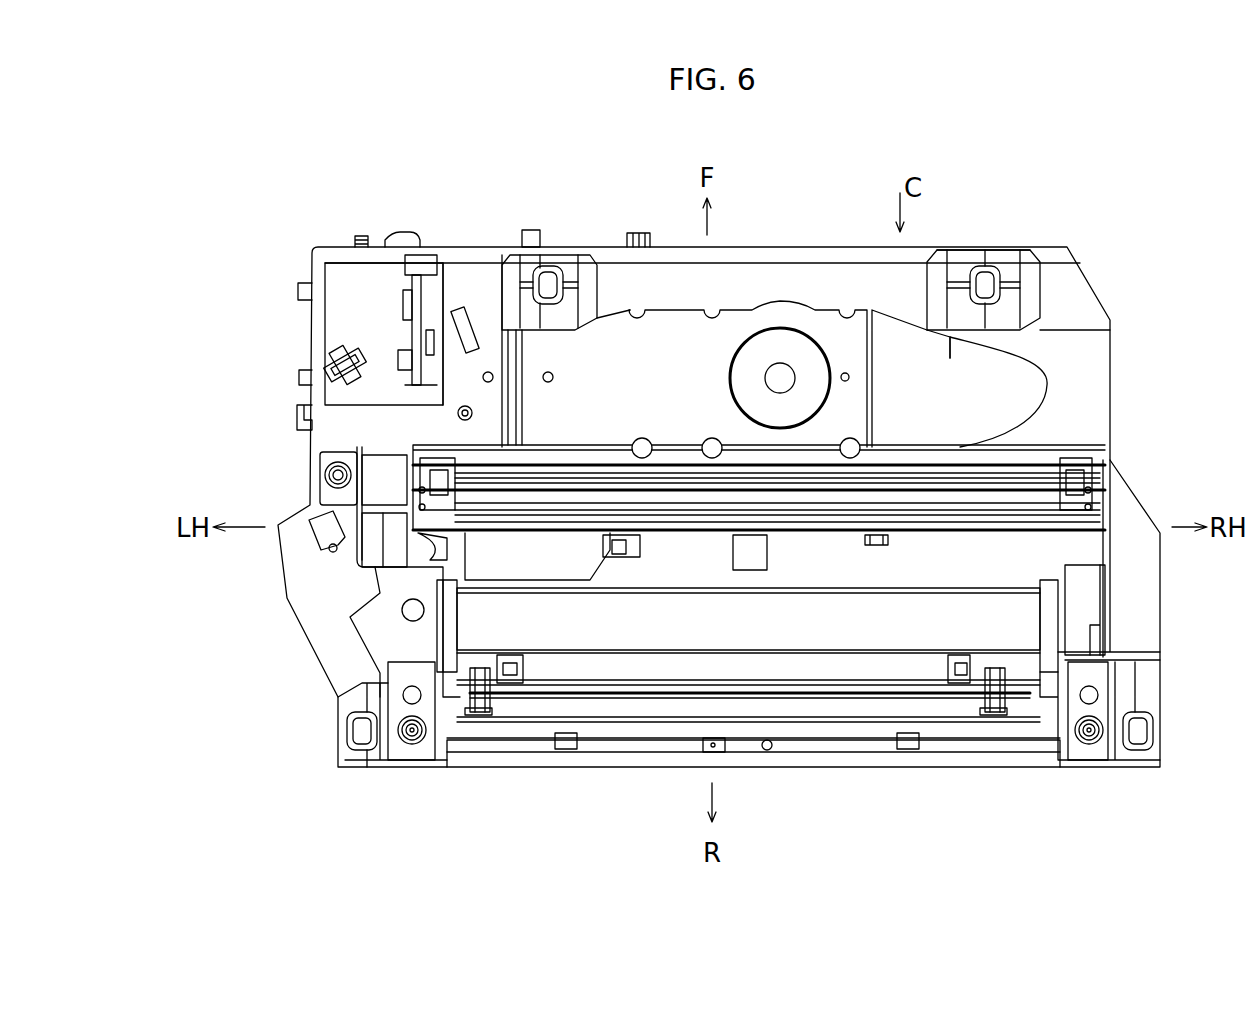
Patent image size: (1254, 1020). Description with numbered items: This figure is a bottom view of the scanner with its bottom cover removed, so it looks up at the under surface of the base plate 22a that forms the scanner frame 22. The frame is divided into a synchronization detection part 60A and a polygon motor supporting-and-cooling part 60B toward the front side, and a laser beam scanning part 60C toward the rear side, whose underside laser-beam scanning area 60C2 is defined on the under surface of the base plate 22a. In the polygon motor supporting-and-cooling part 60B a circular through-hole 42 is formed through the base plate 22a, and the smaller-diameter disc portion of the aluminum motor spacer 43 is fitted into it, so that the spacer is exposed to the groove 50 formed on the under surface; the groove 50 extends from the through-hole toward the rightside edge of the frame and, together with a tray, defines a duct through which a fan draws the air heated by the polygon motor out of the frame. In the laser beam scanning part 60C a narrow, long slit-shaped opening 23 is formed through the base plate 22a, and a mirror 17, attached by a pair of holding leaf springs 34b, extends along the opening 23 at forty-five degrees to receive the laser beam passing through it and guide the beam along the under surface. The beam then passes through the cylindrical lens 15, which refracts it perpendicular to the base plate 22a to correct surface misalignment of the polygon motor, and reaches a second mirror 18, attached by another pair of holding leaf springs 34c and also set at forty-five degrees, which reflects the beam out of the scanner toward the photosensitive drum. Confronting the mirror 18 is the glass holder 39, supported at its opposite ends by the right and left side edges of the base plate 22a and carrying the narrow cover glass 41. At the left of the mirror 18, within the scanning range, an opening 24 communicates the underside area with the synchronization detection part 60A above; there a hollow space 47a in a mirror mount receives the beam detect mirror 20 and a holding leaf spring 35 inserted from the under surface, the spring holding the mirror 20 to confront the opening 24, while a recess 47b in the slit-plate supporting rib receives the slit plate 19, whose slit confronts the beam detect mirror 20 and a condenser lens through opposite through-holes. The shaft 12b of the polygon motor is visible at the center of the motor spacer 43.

The scanner frame 22 is at (1077, 258).
The base plate 22a is at (925, 255).
The synchronization detection part 60A is at (370, 215).
The polygon motor supporting-and-cooling part 60B is at (750, 232).
The laser beam scanning part 60C is at (765, 783).
The underside laser-beam scanning area 60C2 is at (632, 740).
The beam detect mirror 20 is at (325, 405).
The hollow space 47a is at (348, 347).
The recess 47b is at (387, 257).
The holding leaf spring 35 is at (335, 363).
The slit plate 19 is at (420, 320).
The circular through-hole 42 is at (807, 330).
The motor spacer 43 is at (780, 330).
The shaft 12b is at (765, 378).
The groove 50 is at (895, 340).
The glass holder 39 is at (1020, 460).
The mirror 18 is at (1090, 467).
The cover glass 41 is at (1087, 523).
The opening 24 is at (405, 470).
The holding leaf springs 34c is at (433, 500).
The holding leaf springs 34b is at (477, 713).
The cylindrical lens 15 is at (930, 657).
The opening 23 is at (553, 692).
The mirror 17 is at (833, 722).